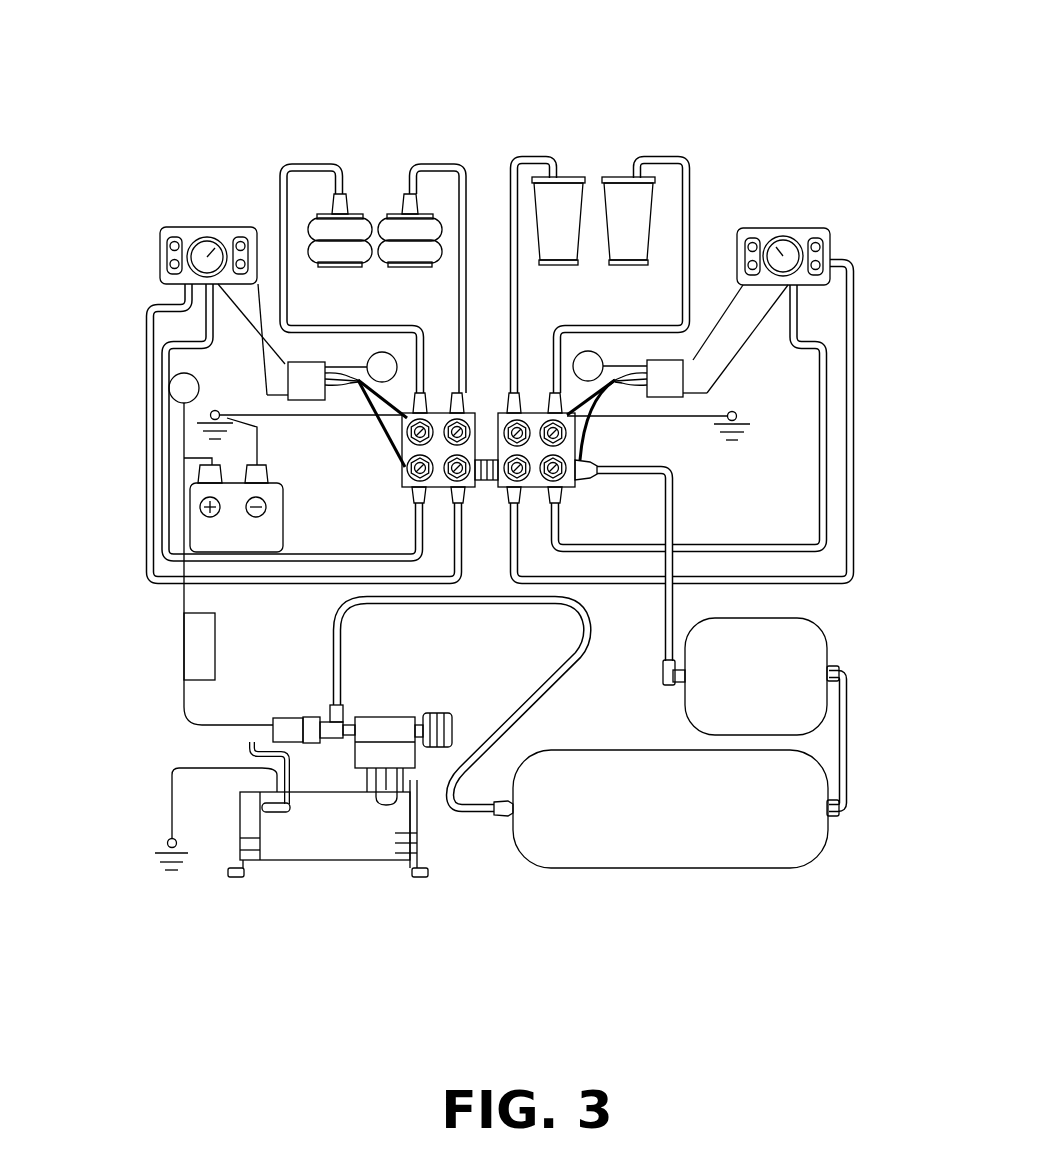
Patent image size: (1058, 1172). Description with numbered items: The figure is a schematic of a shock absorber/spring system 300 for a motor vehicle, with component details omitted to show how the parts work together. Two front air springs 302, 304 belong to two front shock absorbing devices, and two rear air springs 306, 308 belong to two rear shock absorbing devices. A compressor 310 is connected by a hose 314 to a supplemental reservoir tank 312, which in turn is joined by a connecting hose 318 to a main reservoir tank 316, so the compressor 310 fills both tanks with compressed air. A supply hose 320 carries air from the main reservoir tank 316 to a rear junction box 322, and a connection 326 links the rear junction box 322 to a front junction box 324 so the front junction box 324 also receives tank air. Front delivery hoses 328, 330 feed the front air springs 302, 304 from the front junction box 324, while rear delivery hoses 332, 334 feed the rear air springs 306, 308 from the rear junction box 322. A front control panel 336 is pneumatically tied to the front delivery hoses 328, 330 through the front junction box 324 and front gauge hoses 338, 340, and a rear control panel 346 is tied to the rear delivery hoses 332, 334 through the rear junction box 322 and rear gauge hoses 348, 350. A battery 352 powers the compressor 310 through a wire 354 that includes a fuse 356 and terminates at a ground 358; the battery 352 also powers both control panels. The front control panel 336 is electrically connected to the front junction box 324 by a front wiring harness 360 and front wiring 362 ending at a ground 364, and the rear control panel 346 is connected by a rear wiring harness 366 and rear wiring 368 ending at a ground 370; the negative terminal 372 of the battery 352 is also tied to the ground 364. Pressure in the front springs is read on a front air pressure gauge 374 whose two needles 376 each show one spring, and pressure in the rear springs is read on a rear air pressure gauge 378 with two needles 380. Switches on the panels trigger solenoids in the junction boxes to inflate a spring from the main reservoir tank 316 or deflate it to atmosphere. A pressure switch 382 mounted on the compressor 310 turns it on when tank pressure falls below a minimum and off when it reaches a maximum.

The shock absorber/spring system 300 is at (457, 43).
The front air spring 302 is at (358, 217).
The front air spring 304 is at (415, 217).
The rear air spring 306 is at (570, 217).
The rear air spring 308 is at (623, 217).
The compressor 310 is at (312, 842).
The supplemental reservoir tank 312 is at (582, 843).
The hose 314 is at (472, 813).
The main reservoir tank 316 is at (727, 703).
The connecting hose 318 is at (850, 735).
The supply hose 320 is at (662, 640).
The rear junction box 322 is at (565, 468).
The front junction box 324 is at (403, 470).
The connection 326 is at (487, 482).
The front delivery hose 328 is at (313, 170).
The front delivery hose 330 is at (438, 170).
The rear delivery hose 332 is at (520, 147).
The rear delivery hose 334 is at (680, 165).
The front control panel 336 is at (175, 212).
The front gauge hose 338 is at (182, 342).
The front gauge hose 340 is at (150, 388).
The rear control panel 346 is at (819, 206).
The rear gauge hose 348 is at (807, 340).
The rear gauge hose 350 is at (855, 373).
The battery 352 is at (262, 532).
The wire 354 is at (184, 590).
The fuse 356 is at (198, 655).
The ground 358 is at (183, 858).
The front wiring harness 360 is at (262, 342).
The front wiring 362 is at (390, 440).
The ground 364 is at (197, 437).
The rear wiring harness 366 is at (727, 328).
The rear wiring 368 is at (585, 437).
The ground 370 is at (757, 438).
The negative terminal 372 is at (270, 458).
The front air pressure gauge 374 is at (197, 235).
The needle 376 is at (212, 250).
The rear air pressure gauge 378 is at (775, 238).
The needle 380 is at (782, 250).
The pressure switch 382 is at (273, 733).